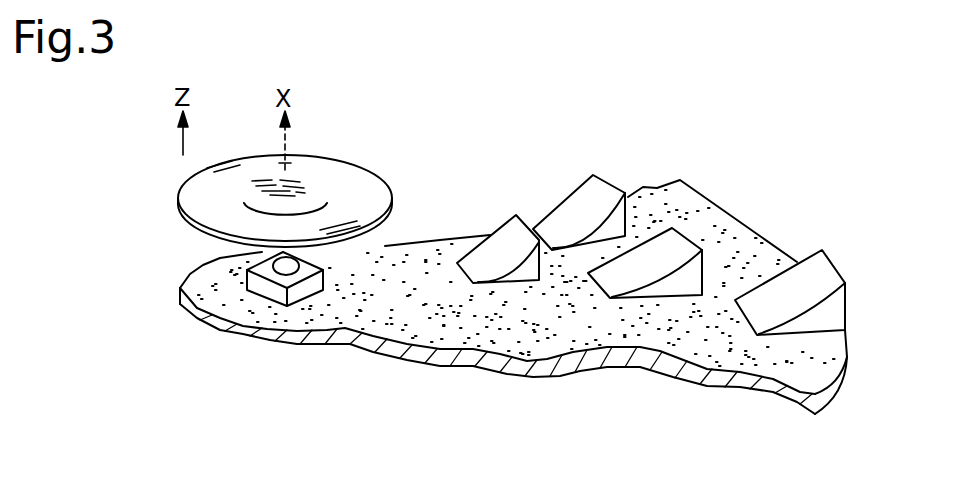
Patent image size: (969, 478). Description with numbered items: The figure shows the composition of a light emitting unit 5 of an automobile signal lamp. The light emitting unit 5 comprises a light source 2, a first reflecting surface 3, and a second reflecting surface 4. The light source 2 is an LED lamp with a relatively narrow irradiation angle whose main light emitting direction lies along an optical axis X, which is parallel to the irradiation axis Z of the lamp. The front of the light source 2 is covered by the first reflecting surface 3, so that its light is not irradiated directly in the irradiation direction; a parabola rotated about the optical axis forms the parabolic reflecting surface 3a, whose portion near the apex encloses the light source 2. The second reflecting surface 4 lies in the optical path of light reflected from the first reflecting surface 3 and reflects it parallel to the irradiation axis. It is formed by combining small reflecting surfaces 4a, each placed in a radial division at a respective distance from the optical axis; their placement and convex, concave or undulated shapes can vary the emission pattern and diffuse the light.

The light source 2 is at (253, 287).
The first reflecting surface 3 is at (360, 185).
The parabolic reflecting surface 3a is at (217, 237).
The second reflecting surface 4 is at (529, 183).
The small reflecting surface 4a is at (577, 203).
The light emitting unit 5 is at (708, 162).